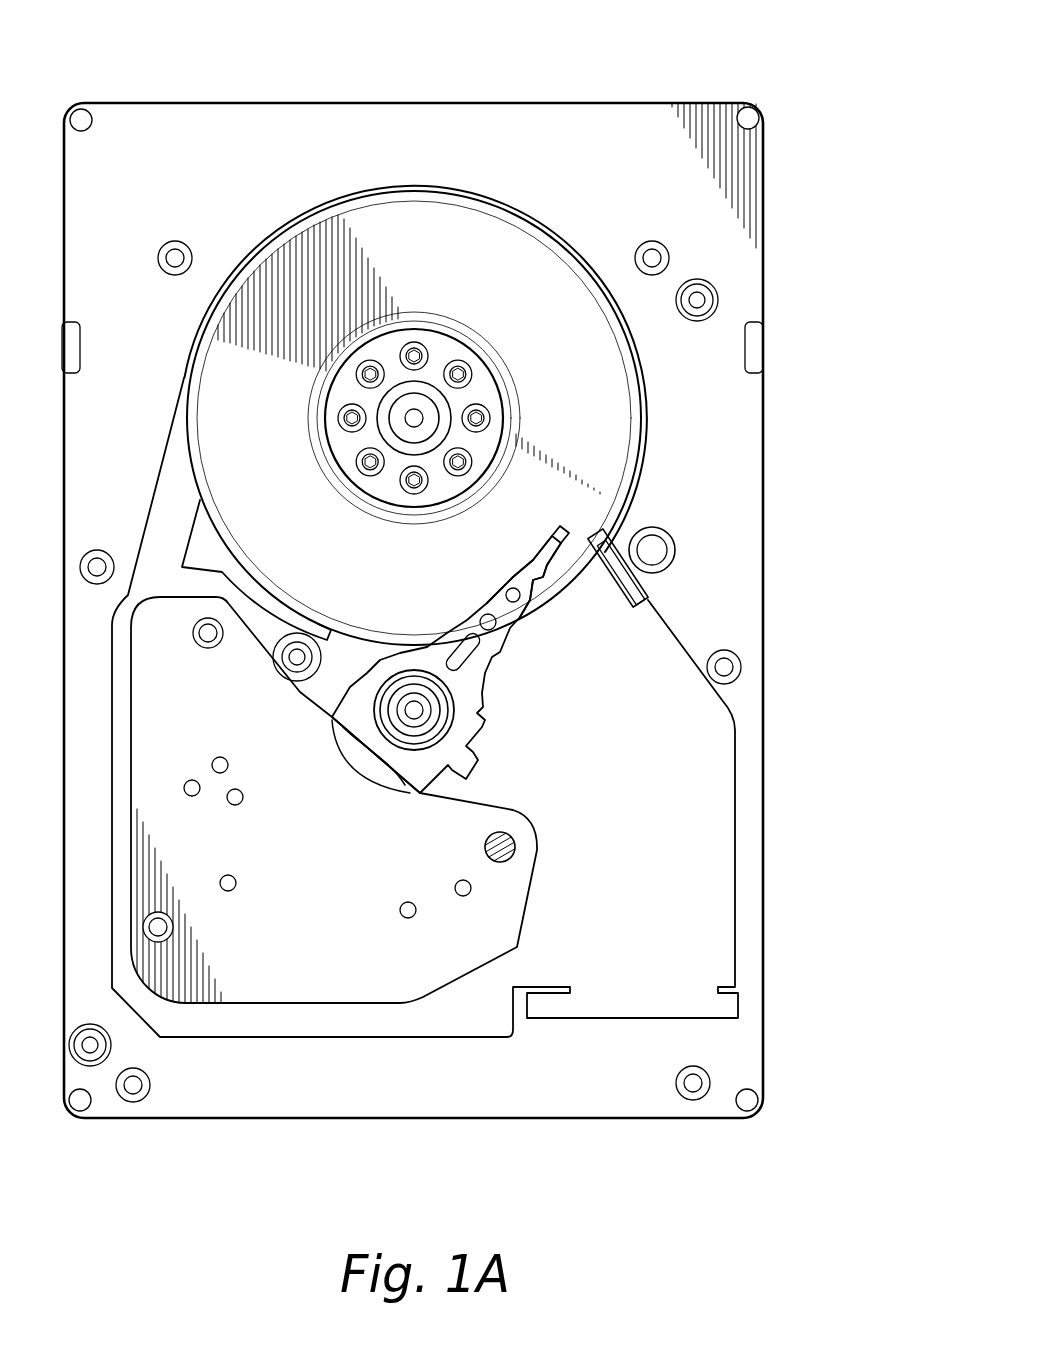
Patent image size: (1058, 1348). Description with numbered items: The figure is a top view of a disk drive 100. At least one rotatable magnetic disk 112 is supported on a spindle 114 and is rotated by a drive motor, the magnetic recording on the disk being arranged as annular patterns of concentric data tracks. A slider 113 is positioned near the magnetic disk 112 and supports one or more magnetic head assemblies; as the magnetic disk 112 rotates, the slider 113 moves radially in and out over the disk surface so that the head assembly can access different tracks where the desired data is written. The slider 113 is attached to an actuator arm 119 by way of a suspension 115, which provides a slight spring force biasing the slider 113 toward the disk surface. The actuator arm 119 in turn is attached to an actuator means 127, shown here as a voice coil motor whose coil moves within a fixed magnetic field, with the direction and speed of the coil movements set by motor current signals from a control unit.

The disk drive 100 is at (660, 30).
The magnetic disk 112 is at (503, 243).
The spindle 114 is at (427, 416).
The slider 113 is at (557, 531).
The suspension 115 is at (525, 567).
The actuator arm 119 is at (495, 600).
The actuator means 127 is at (513, 903).